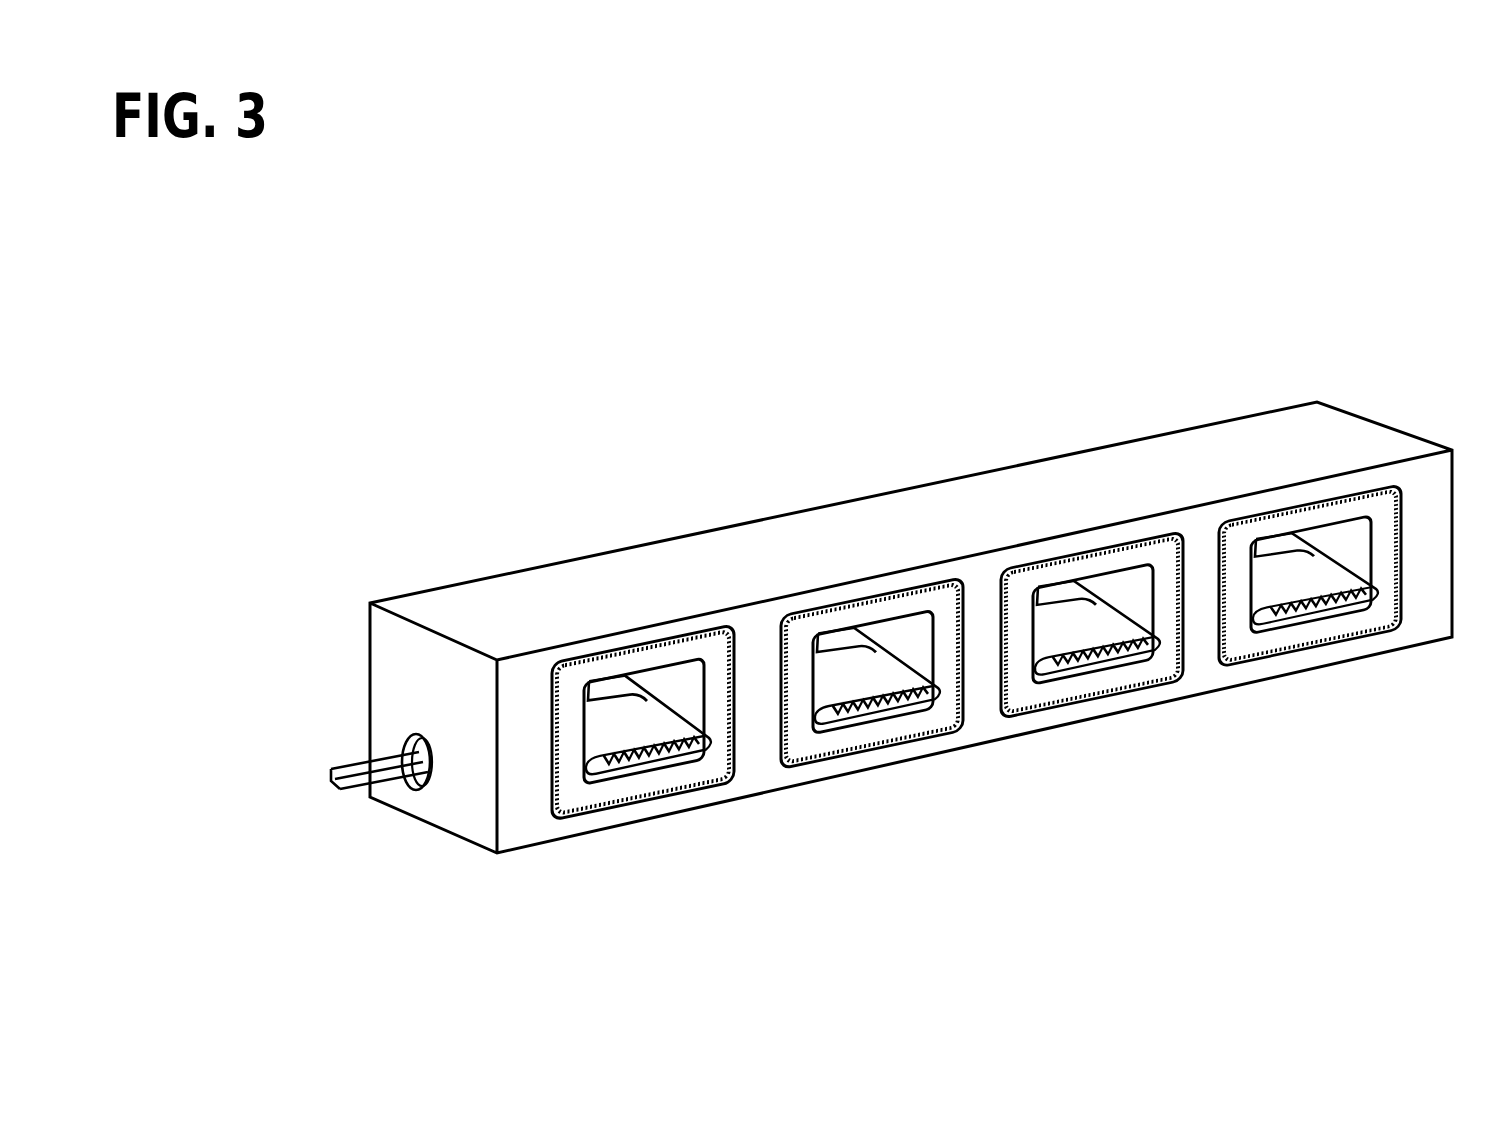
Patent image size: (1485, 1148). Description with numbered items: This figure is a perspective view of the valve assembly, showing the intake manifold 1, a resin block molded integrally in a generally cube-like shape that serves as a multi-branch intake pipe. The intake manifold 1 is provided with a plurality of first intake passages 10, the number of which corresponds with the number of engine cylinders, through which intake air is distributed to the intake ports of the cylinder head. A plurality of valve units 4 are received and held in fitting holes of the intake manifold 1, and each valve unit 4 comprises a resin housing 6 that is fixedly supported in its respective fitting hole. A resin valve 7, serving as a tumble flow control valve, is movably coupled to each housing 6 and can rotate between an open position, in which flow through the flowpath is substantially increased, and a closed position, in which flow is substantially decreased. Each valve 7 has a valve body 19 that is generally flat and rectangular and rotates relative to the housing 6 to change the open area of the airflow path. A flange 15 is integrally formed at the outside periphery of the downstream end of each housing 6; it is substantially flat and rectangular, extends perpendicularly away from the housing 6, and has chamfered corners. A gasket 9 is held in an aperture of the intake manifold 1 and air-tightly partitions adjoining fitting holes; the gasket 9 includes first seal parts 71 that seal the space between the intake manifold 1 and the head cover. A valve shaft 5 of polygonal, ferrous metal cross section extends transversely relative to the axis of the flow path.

The intake manifold 1 is at (417, 588).
The valve unit 4 is at (552, 837).
The valve shaft 5 is at (345, 762).
The housing 6 is at (1009, 714).
The flange 15 is at (650, 783).
The valve 7 is at (982, 541).
The valve body 19 is at (655, 728).
The gasket 9 is at (974, 701).
The first seal part 71 is at (573, 818).
The first intake passage 10 is at (598, 683).